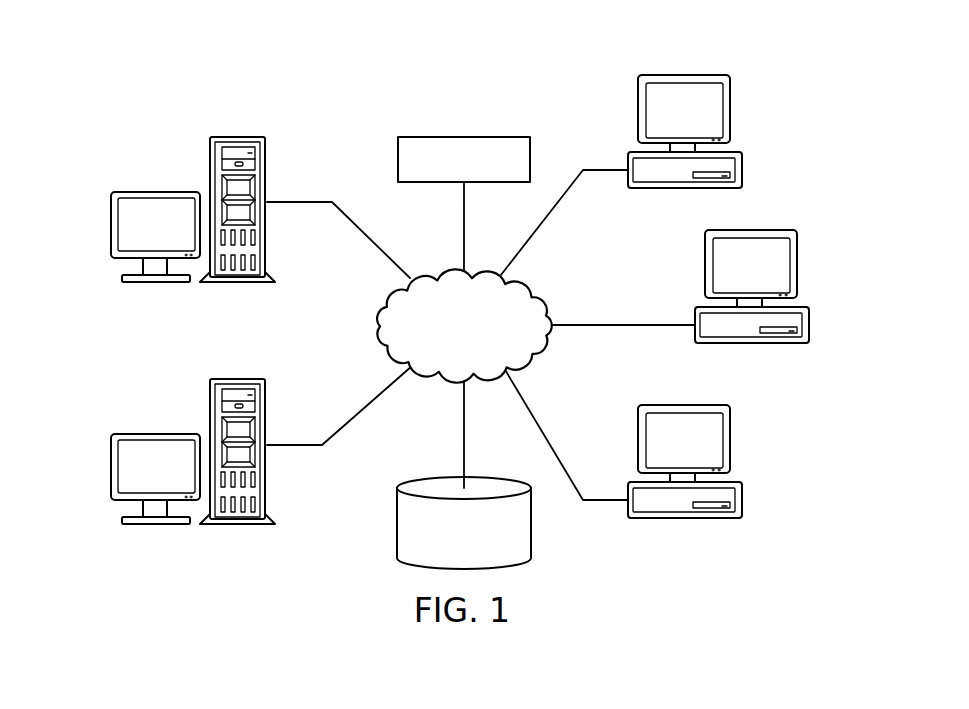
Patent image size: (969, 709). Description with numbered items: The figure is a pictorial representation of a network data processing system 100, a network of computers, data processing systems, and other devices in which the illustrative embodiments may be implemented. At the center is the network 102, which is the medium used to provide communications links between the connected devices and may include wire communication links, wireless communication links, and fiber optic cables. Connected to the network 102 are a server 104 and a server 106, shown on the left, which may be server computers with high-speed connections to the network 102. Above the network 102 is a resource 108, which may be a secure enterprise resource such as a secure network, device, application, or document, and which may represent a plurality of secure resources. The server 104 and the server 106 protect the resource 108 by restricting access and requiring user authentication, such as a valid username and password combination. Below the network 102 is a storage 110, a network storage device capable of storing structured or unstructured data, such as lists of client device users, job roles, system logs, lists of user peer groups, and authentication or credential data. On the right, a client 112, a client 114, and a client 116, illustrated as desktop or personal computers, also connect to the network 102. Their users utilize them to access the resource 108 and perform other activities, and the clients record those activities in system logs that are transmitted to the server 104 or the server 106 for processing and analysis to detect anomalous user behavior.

The network data processing system 100 is at (338, 74).
The network 102 is at (437, 275).
The server 104 is at (112, 230).
The server 106 is at (112, 466).
The resource 108 is at (476, 136).
The storage 110 is at (397, 522).
The client 112 is at (742, 162).
The client 114 is at (805, 335).
The client 116 is at (742, 508).